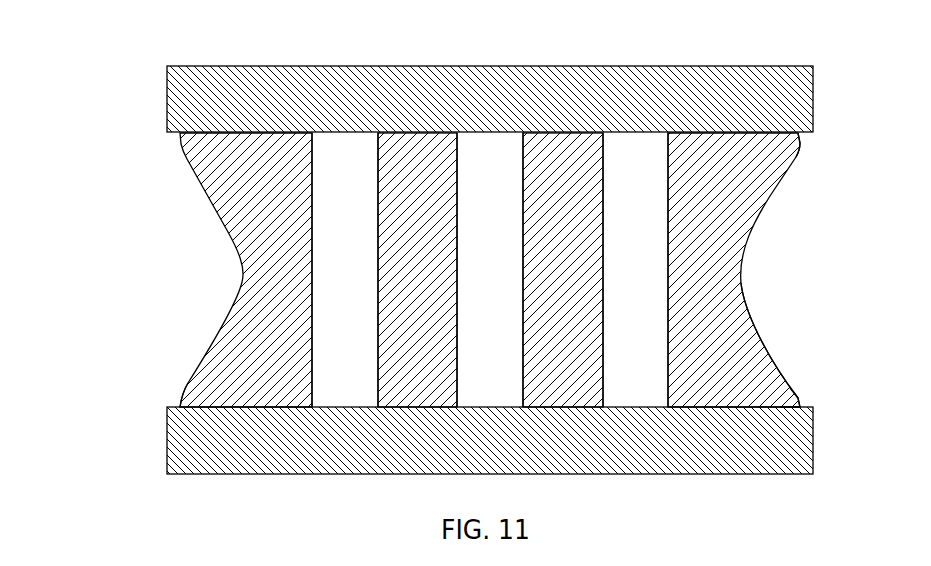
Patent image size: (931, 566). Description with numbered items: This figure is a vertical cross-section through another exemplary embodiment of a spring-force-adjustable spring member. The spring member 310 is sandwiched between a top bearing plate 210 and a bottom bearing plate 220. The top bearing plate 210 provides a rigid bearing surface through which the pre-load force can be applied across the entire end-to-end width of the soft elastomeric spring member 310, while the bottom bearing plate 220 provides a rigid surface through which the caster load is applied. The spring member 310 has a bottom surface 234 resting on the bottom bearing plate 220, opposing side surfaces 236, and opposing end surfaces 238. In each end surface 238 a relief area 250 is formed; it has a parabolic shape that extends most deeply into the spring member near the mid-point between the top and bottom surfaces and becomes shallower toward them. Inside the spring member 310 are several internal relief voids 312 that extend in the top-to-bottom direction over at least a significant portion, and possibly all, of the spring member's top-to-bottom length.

The spring member 310 is at (116, 32).
The top bearing plate 210 is at (175, 117).
The bottom bearing plate 220 is at (175, 447).
The relief area 250 is at (205, 232).
The internal relief voids 312 is at (475, 347).
The end surfaces 238 is at (180, 402).
The side surfaces 236 is at (723, 357).
The bottom surface 234 is at (760, 407).